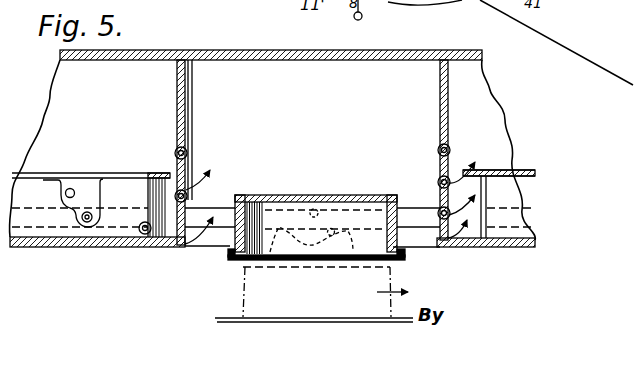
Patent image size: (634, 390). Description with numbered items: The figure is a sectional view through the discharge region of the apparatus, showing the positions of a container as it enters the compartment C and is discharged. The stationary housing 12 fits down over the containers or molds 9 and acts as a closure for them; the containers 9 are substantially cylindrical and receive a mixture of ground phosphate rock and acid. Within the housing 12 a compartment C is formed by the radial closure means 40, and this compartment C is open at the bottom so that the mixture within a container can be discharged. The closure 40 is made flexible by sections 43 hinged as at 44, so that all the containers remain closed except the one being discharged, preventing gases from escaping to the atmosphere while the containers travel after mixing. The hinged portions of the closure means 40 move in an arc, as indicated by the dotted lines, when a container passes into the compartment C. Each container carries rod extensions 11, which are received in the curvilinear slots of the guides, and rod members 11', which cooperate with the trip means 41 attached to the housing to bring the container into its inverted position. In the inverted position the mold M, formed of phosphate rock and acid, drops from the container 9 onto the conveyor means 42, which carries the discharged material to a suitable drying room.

The stationary housing 12 is at (232, 50).
The radial closure means 40 is at (177, 90).
The sections 43 is at (187, 176).
The hinges 44 is at (187, 153).
The containers or molds 9 is at (75, 173).
The rod extensions 11 is at (80, 183).
The rod members 11' is at (95, 212).
The compartment C is at (182, 250).
The trip means 41 is at (285, 268).
The conveyor means 42 is at (358, 324).
The mold M is at (388, 275).